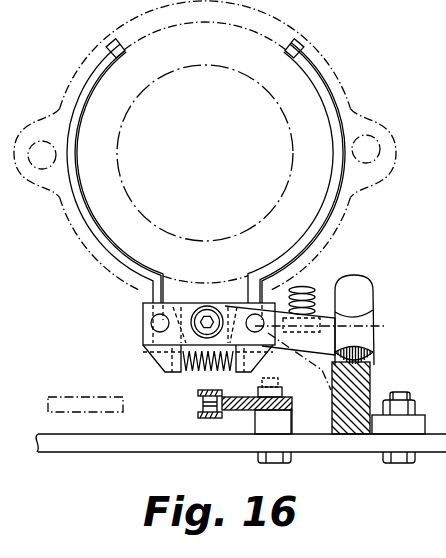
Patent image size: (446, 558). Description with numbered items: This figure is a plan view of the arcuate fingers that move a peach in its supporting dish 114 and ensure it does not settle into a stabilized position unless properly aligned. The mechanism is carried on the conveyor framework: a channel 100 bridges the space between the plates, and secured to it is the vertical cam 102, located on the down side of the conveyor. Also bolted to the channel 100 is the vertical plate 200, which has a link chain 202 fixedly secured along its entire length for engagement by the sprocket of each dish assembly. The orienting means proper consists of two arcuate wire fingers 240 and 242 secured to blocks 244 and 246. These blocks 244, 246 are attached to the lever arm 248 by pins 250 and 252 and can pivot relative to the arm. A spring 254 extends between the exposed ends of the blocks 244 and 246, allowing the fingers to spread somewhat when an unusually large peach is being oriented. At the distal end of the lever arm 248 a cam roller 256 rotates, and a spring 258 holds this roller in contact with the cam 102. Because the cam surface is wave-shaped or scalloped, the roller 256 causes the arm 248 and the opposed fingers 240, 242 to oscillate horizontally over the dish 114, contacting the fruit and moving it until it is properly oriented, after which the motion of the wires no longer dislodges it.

The channel 100 is at (187, 443).
The vertical cam 102 is at (370, 384).
The supporting dish 114 is at (139, 89).
The vertical plate 200 is at (247, 410).
The link chain 202 is at (200, 402).
The arcuate wire finger 240 is at (331, 99).
The arcuate wire finger 242 is at (84, 86).
The block 244 is at (262, 355).
The block 246 is at (162, 357).
The lever arm 248 is at (353, 303).
The pin 250 is at (151, 322).
The pin 252 is at (246, 315).
The spring 254 is at (197, 367).
The cam roller 256 is at (372, 328).
The spring 258 is at (312, 287).